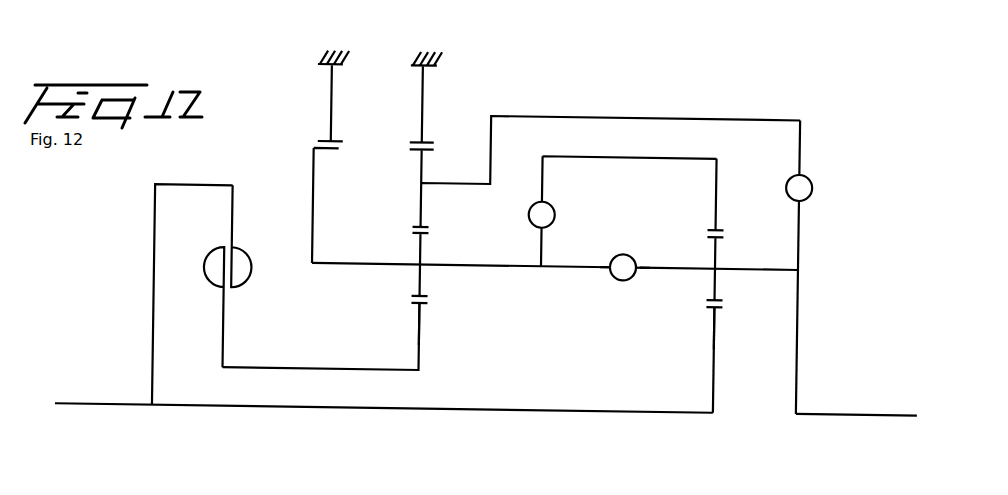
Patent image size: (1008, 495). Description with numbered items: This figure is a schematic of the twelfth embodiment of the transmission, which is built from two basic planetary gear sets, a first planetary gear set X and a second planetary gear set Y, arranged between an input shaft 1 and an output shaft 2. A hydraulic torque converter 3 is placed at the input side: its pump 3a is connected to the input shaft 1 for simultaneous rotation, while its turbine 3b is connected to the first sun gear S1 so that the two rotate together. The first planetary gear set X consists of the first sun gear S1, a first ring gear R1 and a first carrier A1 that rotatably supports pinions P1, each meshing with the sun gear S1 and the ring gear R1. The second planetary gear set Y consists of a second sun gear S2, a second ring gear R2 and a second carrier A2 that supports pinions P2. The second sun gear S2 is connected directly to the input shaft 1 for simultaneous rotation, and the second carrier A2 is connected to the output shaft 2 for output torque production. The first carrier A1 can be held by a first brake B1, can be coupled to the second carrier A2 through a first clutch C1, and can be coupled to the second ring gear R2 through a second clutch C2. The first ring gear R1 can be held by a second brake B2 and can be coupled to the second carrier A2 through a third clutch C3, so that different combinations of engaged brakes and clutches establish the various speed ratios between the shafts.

The input shaft 1 is at (100, 408).
The output shaft 2 is at (855, 408).
The hydraulic torque converter 3 is at (226, 271).
The pump 3a is at (245, 284).
The turbine 3b is at (207, 265).
The first carrier A1 is at (343, 266).
The second carrier A2 is at (740, 263).
The first brake B1 is at (325, 141).
The second brake B2 is at (423, 143).
The first clutch C1 is at (615, 279).
The second clutch C2 is at (552, 205).
The third clutch C3 is at (811, 179).
The pinions P1 is at (420, 281).
The pinions P2 is at (717, 281).
The first ring gear R1 is at (419, 198).
The second ring gear R2 is at (714, 181).
The first sun gear S1 is at (421, 347).
The second sun gear S2 is at (718, 364).
The first planetary gear set X is at (411, 308).
The second planetary gear set Y is at (692, 279).